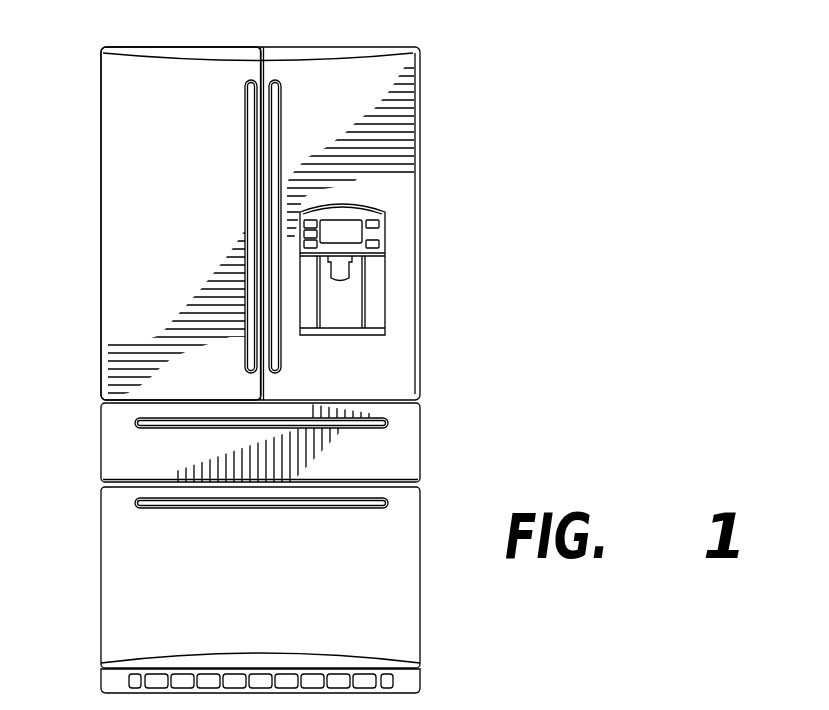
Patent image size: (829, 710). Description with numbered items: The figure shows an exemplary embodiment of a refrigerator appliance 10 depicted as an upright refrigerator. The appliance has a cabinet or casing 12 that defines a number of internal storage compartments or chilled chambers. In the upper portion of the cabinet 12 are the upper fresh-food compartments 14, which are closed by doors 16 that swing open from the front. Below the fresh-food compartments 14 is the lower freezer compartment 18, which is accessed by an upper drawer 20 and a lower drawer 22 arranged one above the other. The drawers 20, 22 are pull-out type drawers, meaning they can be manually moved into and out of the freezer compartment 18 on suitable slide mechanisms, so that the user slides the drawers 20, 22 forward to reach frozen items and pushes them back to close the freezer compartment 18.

The refrigerator appliance 10 is at (294, 370).
The cabinet 12 is at (420, 312).
The upper fresh-food compartments 14 is at (128, 198).
The doors 16 is at (263, 226).
The lower freezer compartment 18 is at (392, 448).
The upper drawer 20 is at (157, 470).
The lower drawer 22 is at (277, 597).